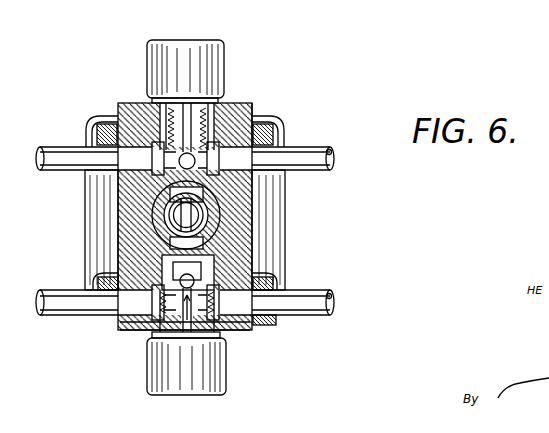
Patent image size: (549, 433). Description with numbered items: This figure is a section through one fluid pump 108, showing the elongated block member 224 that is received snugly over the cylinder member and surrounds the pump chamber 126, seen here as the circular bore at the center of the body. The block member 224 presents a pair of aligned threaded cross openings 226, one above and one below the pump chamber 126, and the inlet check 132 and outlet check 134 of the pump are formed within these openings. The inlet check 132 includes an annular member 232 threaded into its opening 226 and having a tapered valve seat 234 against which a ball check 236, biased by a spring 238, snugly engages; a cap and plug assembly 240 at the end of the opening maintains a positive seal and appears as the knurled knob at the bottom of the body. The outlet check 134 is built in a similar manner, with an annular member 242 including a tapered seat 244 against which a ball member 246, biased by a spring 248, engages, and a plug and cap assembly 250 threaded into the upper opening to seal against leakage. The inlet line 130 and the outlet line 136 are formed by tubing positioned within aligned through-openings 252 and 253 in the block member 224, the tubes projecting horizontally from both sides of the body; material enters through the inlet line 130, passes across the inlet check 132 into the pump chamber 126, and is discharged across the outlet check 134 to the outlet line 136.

The fluid pump 108 is at (296, 190).
The pump chamber 126 is at (125, 243).
The inlet line 130 is at (318, 290).
The inlet check 132 is at (185, 335).
The outlet check 134 is at (250, 118).
The outlet line 136 is at (336, 162).
The elongated block member 224 is at (204, 147).
The threaded cross openings 226 is at (210, 290).
The annular member 232 is at (165, 272).
The tapered valve seat 234 is at (166, 310).
The ball check 236 is at (157, 292).
The spring 238 is at (222, 265).
The cap and plug assembly 240 is at (228, 372).
The annular member 242 is at (157, 113).
The tapered seat 244 is at (176, 162).
The ball member 246 is at (148, 112).
The spring 248 is at (172, 152).
The plug and cap assembly 250 is at (165, 40).
The through-opening 252 is at (263, 318).
The through-opening 253 is at (100, 140).